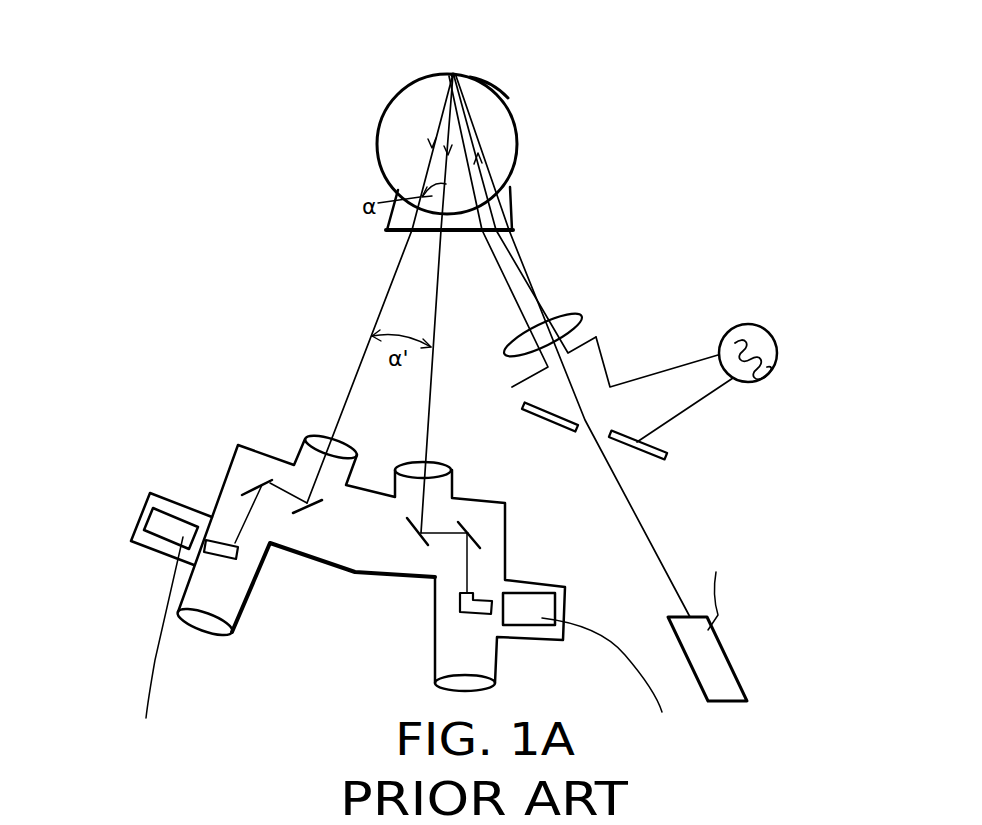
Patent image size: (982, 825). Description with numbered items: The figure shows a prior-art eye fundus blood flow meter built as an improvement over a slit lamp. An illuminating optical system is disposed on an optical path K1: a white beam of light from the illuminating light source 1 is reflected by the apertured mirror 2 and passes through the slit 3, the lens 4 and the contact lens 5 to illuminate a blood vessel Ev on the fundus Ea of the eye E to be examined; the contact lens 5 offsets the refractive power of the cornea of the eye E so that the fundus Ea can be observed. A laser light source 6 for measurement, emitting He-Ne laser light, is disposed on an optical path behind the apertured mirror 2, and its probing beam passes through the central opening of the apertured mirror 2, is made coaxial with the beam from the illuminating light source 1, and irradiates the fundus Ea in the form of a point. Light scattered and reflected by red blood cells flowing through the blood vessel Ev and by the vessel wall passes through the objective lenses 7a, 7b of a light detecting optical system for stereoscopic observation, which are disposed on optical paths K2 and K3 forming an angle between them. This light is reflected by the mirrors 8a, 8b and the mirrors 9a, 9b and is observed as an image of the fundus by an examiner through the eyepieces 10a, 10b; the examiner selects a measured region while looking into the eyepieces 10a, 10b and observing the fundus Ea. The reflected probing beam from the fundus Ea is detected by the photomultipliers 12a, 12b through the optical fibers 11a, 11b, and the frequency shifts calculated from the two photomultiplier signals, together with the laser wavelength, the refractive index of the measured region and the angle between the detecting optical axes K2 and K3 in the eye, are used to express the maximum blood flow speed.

The illuminating light source 1 is at (778, 346).
The apertured mirror 2 is at (553, 430).
The slit 3 is at (598, 336).
The lens 4 is at (580, 316).
The contact lens 5 is at (511, 216).
The laser light source for measurement 6 is at (720, 667).
The objective lens 7a is at (438, 470).
The objective lens 7b is at (320, 438).
The mirror 8a is at (428, 544).
The mirror 8b is at (302, 523).
The mirror 9a is at (481, 545).
The mirror 9b is at (248, 490).
The eyepiece 10a is at (443, 687).
The eyepiece 10b is at (200, 629).
The optical fiber 11a is at (481, 598).
The optical fiber 11b is at (227, 543).
The photomultiplier 12a is at (541, 622).
The photomultiplier 12b is at (168, 535).
The eye to be examined E is at (397, 90).
The fundus of the eye Ea is at (508, 98).
The blood vessel Ev is at (453, 73).
The optical path K1 is at (518, 268).
The optical path K2 is at (440, 311).
The optical path K3 is at (389, 288).